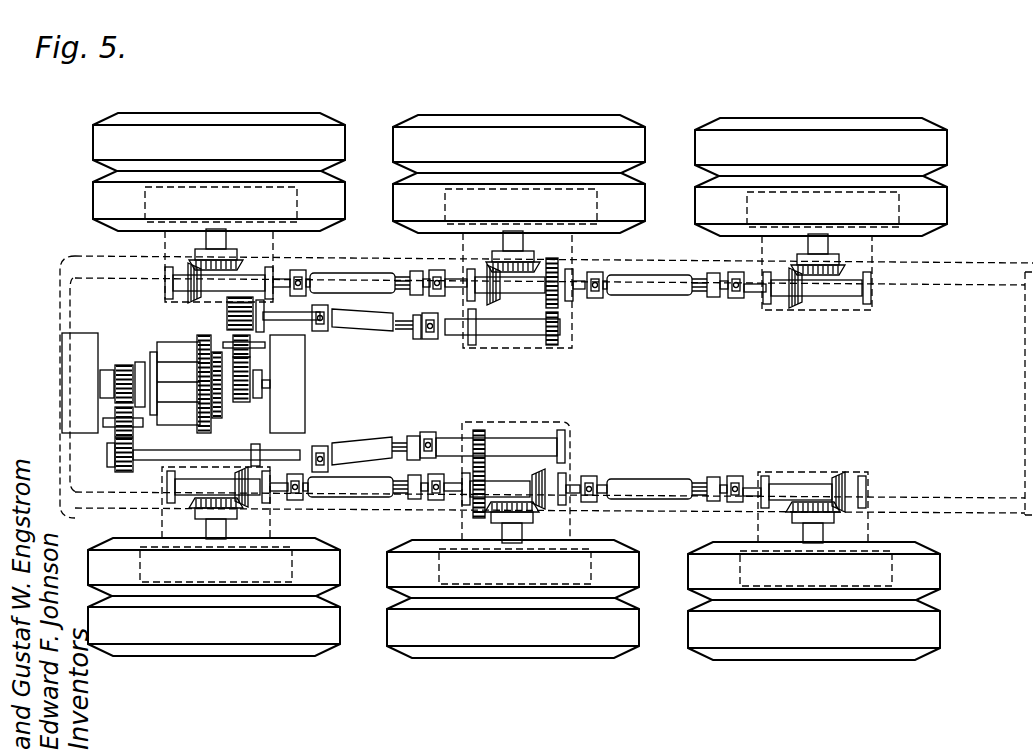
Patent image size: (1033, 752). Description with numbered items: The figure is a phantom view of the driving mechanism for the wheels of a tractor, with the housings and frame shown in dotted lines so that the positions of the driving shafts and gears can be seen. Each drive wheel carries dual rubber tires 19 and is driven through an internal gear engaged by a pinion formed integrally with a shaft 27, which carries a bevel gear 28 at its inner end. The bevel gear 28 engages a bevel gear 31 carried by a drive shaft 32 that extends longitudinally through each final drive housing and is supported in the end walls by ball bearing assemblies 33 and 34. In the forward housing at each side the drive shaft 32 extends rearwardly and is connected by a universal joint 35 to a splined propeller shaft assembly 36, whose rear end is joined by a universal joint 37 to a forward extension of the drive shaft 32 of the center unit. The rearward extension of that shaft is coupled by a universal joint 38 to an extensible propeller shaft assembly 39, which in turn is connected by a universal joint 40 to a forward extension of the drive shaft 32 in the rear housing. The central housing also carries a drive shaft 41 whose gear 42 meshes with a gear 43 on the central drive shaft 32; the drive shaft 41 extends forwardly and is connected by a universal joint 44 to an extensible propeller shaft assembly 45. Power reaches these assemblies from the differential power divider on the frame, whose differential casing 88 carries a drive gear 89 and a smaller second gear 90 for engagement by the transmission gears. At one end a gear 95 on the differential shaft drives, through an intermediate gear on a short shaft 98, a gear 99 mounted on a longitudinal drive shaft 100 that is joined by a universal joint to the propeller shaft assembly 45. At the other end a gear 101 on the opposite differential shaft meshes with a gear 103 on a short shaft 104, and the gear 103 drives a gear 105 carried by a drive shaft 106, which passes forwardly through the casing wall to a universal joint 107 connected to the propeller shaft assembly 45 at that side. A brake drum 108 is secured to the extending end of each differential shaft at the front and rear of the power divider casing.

The dual rubber tires 19 is at (270, 130).
The shaft 27 is at (210, 240).
The bevel gear 28 is at (243, 260).
The bevel gear 31 is at (495, 302).
The drive shaft 32 is at (840, 300).
The ball bearing assembly 33 is at (476, 462).
The ball bearing assembly 34 is at (560, 300).
The universal joint 35 is at (737, 300).
The splined propeller shaft assembly 36 is at (655, 296).
The universal joint 37 is at (595, 275).
The universal joint 38 is at (437, 278).
The extensible propeller shaft assembly 39 is at (375, 282).
The universal joint 40 is at (303, 275).
The drive shaft 41 is at (495, 328).
The gear 42 is at (555, 340).
The gear 43 is at (556, 262).
The universal joint 44 is at (428, 340).
The extensible propeller shaft assembly 45 is at (355, 456).
The differential casing 88 is at (170, 343).
The drive gear 89 is at (203, 336).
The second gear 90 is at (217, 350).
The gear 95 is at (124, 365).
The short shaft 98 is at (137, 425).
The gear 99 is at (125, 472).
The drive shaft 100 is at (190, 456).
The gear 101 is at (258, 432).
The gear 103 is at (265, 384).
The short shaft 104 is at (253, 345).
The gear 105 is at (225, 310).
The drive shaft 106 is at (280, 283).
The universal joint 107 is at (318, 328).
The brake drum 108 is at (80, 348).